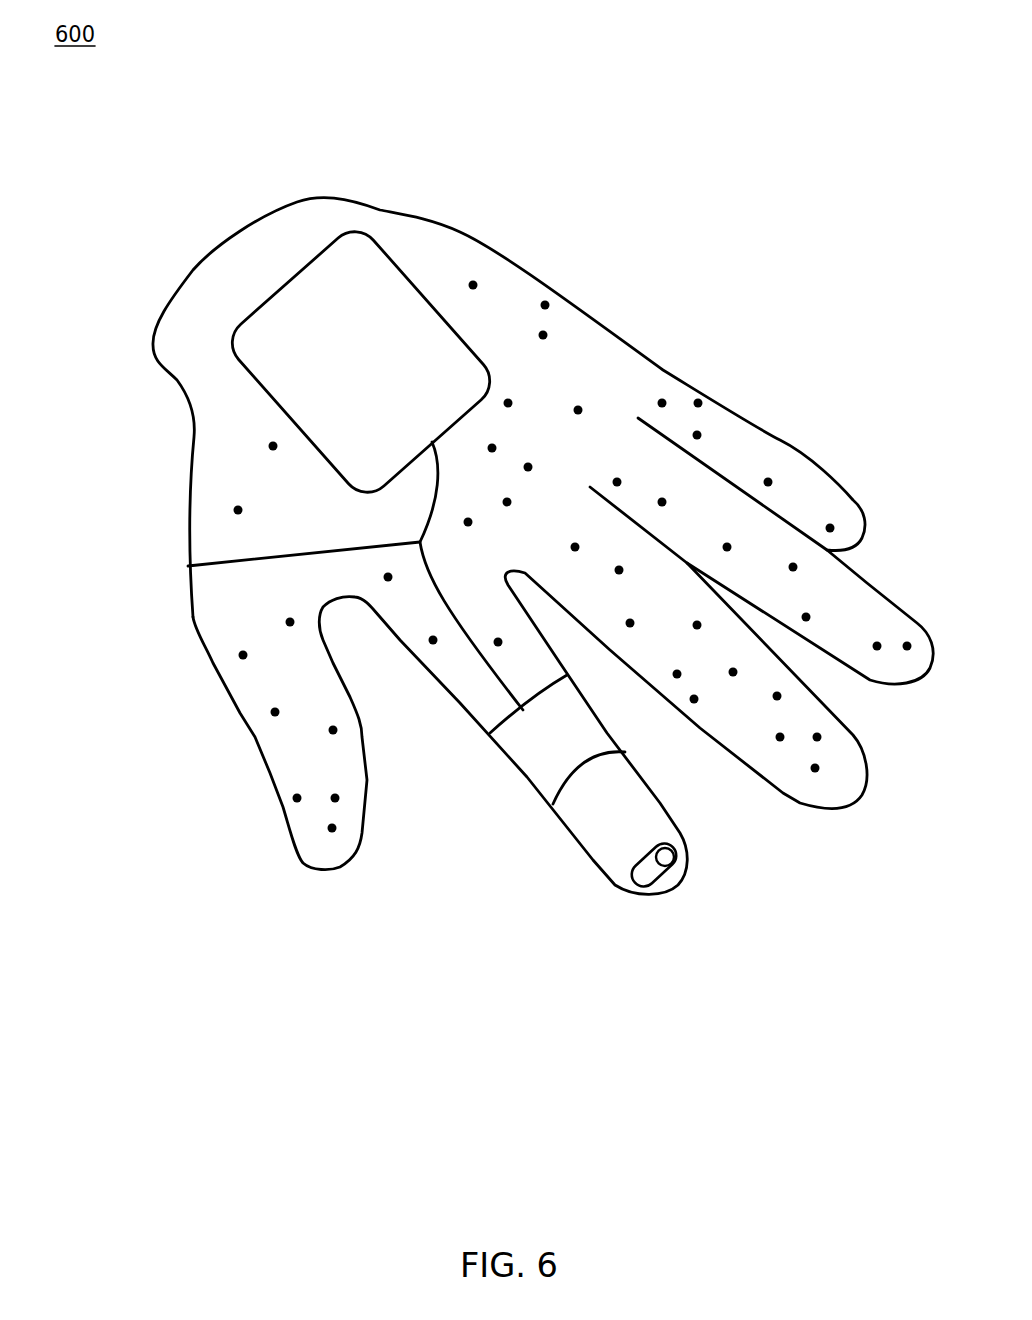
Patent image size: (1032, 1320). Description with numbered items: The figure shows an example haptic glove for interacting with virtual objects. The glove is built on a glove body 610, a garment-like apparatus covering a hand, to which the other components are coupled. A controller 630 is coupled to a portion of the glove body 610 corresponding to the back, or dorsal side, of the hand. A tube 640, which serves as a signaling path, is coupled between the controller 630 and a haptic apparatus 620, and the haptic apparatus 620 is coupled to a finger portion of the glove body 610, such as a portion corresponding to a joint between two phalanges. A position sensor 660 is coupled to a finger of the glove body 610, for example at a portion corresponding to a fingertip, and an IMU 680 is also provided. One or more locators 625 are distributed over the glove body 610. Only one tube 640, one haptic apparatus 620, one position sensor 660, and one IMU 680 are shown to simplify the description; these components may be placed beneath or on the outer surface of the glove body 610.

The glove body 610 is at (197, 412).
The haptic apparatus 620 is at (532, 762).
The locators 625 is at (702, 403).
The controller 630 is at (348, 288).
The tube 640 is at (188, 566).
The position sensor 660 is at (674, 857).
The IMU 680 is at (727, 962).